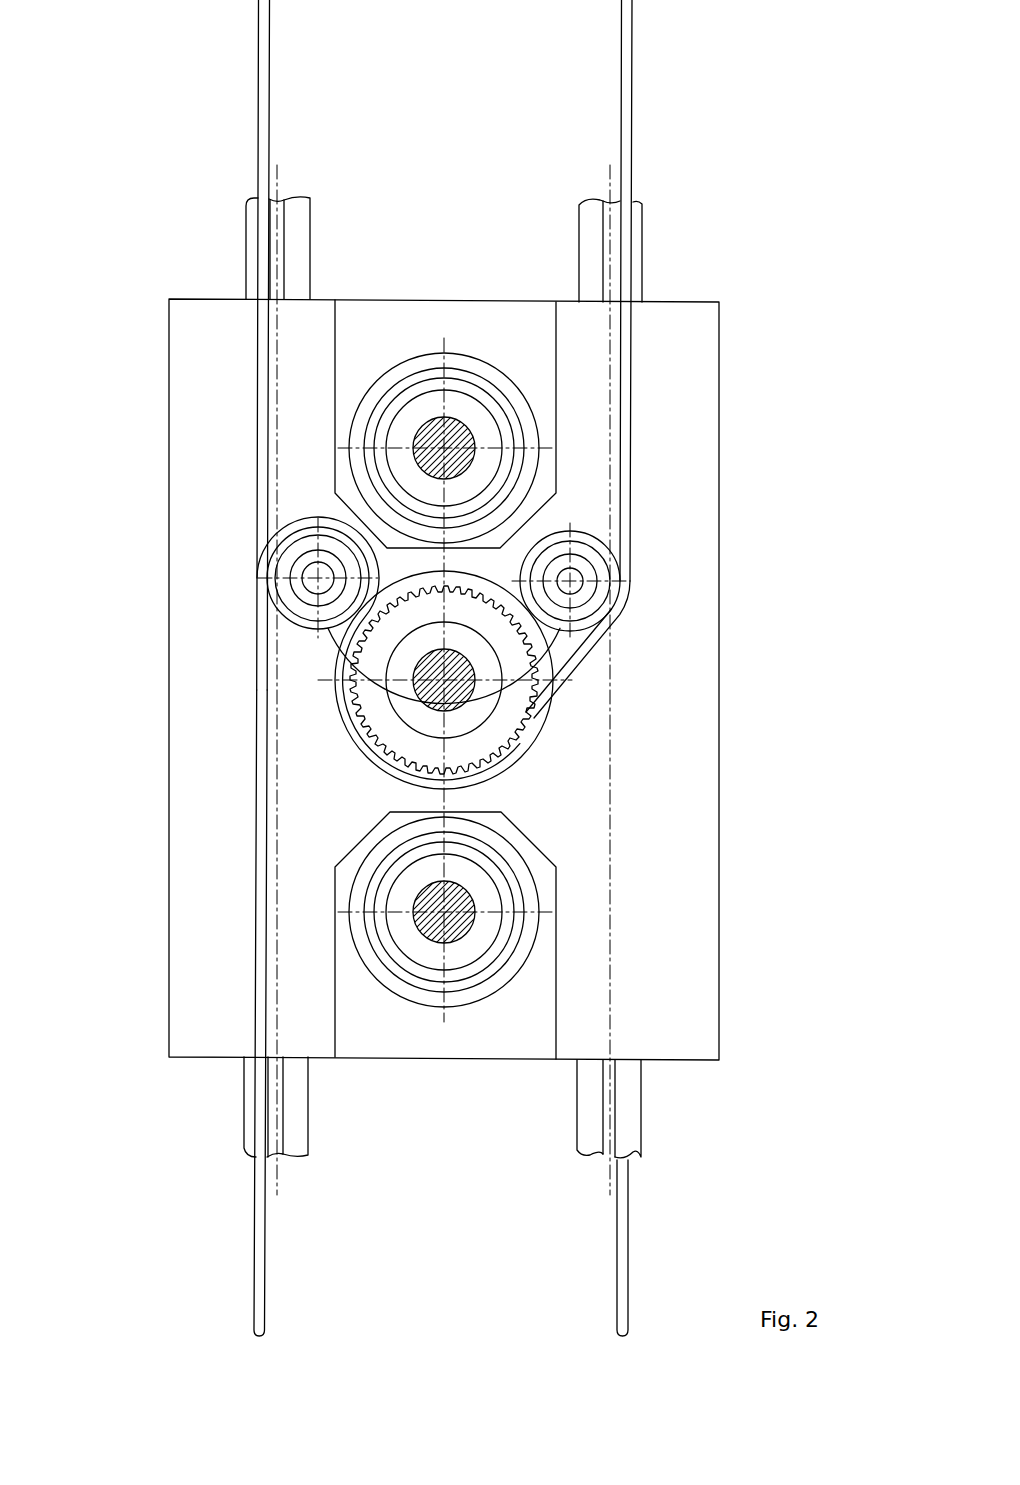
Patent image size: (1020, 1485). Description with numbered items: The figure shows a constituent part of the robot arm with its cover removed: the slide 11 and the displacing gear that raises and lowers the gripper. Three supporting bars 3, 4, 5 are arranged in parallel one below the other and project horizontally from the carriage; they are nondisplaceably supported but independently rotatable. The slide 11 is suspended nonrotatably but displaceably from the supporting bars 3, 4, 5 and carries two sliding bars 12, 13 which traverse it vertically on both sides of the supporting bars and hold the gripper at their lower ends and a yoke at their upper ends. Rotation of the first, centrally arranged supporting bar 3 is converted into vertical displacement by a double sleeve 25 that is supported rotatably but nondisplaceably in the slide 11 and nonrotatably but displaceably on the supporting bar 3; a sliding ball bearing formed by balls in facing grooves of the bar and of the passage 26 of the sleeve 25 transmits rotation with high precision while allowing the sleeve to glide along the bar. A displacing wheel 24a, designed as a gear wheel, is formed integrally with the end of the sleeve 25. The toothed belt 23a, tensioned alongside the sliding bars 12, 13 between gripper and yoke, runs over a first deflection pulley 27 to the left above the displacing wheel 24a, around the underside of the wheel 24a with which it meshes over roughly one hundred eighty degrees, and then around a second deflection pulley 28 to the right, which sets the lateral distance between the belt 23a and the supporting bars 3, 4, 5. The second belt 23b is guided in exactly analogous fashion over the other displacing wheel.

The first supporting bar 3 is at (473, 666).
The supporting bar 4 is at (473, 440).
The supporting bar 5 is at (475, 902).
The slide 11 is at (720, 350).
The sliding bar 12 is at (635, 247).
The sliding bar 13 is at (256, 236).
The belt 23a is at (627, 100).
The belt 23b is at (263, 92).
The displacing wheel 24a is at (512, 726).
The double sleeve 25 is at (398, 668).
The passage 26 is at (413, 700).
The first deflection pulley 27 is at (288, 565).
The second deflection pulley 28 is at (597, 563).